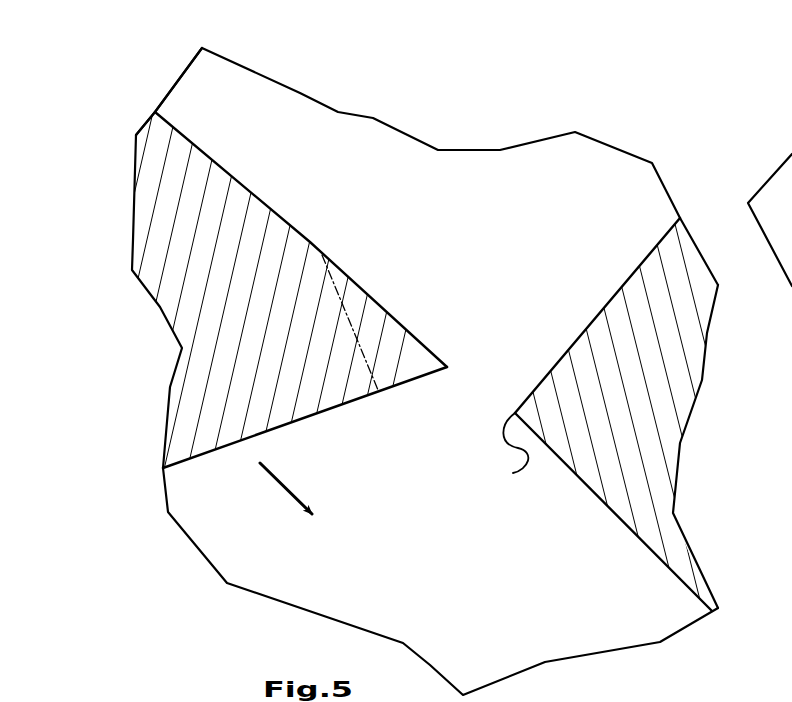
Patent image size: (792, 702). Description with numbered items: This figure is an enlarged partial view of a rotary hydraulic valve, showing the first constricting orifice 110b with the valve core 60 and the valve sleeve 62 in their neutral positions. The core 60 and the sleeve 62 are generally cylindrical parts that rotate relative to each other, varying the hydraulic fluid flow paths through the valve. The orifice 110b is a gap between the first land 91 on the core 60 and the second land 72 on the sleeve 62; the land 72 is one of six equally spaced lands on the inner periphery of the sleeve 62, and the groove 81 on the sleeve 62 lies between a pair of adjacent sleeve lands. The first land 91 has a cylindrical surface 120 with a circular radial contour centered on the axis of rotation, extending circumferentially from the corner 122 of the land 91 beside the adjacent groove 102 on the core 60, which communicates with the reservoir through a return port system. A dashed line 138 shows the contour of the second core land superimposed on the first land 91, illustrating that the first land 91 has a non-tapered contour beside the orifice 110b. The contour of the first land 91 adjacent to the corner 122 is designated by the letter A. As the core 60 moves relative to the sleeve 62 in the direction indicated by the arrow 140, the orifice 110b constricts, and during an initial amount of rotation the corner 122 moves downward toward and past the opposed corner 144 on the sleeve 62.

The valve core 60 is at (146, 127).
The first land 91 is at (175, 172).
The cylindrical surface 120 is at (261, 200).
The groove 81 is at (444, 227).
The dashed line 138 is at (358, 345).
The first constricting orifice 110b is at (488, 378).
The valve sleeve 62 is at (701, 338).
The second land 72 is at (662, 400).
The corner 122 is at (447, 367).
The groove 102 is at (367, 467).
The corner 144 is at (501, 453).
The arrow 140 is at (273, 480).
The contour A is at (229, 318).